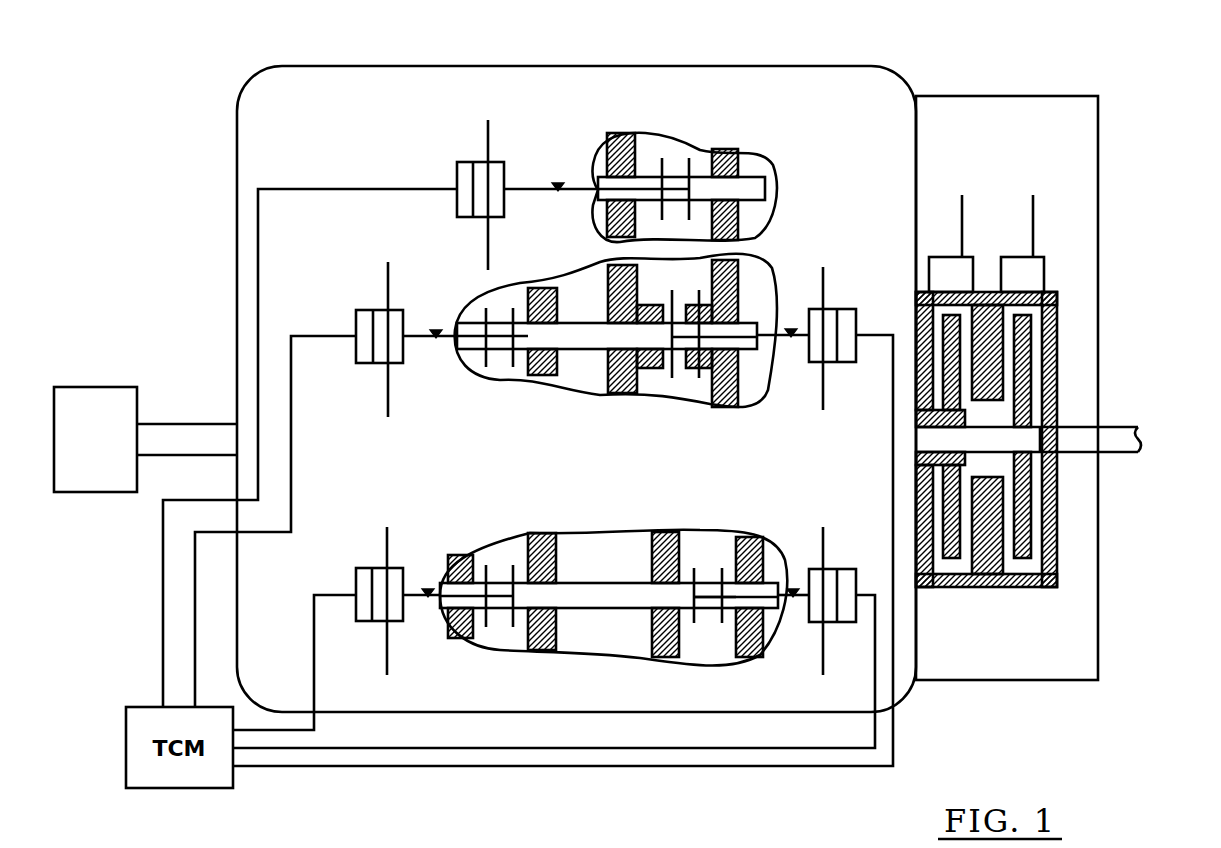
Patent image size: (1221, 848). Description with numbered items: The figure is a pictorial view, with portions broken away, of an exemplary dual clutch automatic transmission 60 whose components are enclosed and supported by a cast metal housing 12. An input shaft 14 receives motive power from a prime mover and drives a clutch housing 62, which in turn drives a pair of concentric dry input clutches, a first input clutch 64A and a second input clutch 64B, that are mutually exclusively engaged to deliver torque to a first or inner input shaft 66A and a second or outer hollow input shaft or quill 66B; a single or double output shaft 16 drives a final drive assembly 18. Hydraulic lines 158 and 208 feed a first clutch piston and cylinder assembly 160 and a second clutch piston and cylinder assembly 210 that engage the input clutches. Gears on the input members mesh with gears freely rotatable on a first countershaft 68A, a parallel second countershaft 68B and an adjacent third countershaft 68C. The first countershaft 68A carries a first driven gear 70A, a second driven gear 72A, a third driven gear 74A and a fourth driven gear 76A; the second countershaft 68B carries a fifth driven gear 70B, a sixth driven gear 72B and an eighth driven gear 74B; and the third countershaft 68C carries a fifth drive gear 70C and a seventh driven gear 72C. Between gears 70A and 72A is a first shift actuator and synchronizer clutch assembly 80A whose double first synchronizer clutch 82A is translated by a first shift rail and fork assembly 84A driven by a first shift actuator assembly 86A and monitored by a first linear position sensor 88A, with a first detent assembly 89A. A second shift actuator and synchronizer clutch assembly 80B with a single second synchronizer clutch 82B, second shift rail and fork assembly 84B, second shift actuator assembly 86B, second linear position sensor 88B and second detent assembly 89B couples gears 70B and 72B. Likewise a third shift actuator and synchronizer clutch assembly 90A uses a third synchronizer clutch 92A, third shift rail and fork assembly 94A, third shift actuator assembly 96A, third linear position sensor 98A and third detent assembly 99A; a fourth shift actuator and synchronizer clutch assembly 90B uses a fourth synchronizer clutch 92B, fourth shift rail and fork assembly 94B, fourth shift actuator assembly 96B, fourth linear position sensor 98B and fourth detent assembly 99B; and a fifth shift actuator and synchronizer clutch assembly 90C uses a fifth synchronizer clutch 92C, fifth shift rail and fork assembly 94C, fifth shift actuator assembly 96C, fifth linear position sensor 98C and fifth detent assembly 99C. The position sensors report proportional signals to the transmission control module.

The housing 12 is at (890, 65).
The input shaft 14 is at (1108, 432).
The output shaft 16 is at (160, 425).
The final drive assembly 18 is at (80, 386).
The dual clutch automatic transmission 60 is at (1129, 99).
The clutch housing 62 is at (1058, 342).
The first input clutch 64A is at (1022, 383).
The second input clutch 64B is at (960, 571).
The first input shaft 66A is at (1030, 442).
The second input shaft 66B is at (925, 470).
The first countershaft 68A is at (580, 592).
The second countershaft 68B is at (580, 340).
The third countershaft 68C is at (755, 191).
The first driven gear 70A is at (752, 646).
The fifth driven gear 70B is at (725, 403).
The fifth drive gear 70C is at (727, 156).
The second driven gear 72A is at (665, 641).
The sixth driven gear 72B is at (628, 391).
The seventh driven gear 72C is at (617, 151).
The third driven gear 74A is at (545, 641).
The eighth driven gear 74B is at (538, 370).
The fourth driven gear 76A is at (460, 636).
The first shift actuator and synchronizer clutch assembly 80A is at (764, 497).
The second shift actuator and synchronizer clutch assembly 80B is at (764, 256).
The first synchronizer clutch 82A is at (708, 601).
The second synchronizer clutch 82B is at (686, 372).
The first shift rail and fork assembly 84A is at (733, 590).
The second shift rail and fork assembly 84B is at (797, 344).
The first shift actuator assembly 86A is at (830, 580).
The second shift actuator assembly 86B is at (830, 322).
The first linear position sensor 88A is at (838, 615).
The second linear position sensor 88B is at (845, 358).
The first detent assembly 89A is at (793, 588).
The second detent assembly 89B is at (791, 330).
The third shift actuator and synchronizer clutch assembly 90A is at (409, 491).
The fourth shift actuator and synchronizer clutch assembly 90B is at (409, 235).
The fifth shift actuator and synchronizer clutch assembly 90C is at (807, 129).
The third synchronizer clutch 92A is at (497, 590).
The fourth synchronizer clutch 92B is at (498, 336).
The fifth synchronizer clutch 92C is at (671, 186).
The third shift rail and fork assembly 94A is at (408, 598).
The fourth shift rail and fork assembly 94B is at (413, 339).
The fifth shift rail and fork assembly 94C is at (524, 190).
The third shift actuator assembly 96A is at (382, 626).
The fourth shift actuator assembly 96B is at (382, 353).
The fifth shift actuator assembly 96C is at (497, 167).
The third linear position sensor 98A is at (362, 575).
The fourth linear position sensor 98B is at (363, 315).
The fifth linear position sensor 98C is at (466, 166).
The third detent assembly 99A is at (428, 588).
The fourth detent assembly 99B is at (436, 331).
The fifth detent assembly 99C is at (558, 184).
The line 158 is at (1036, 222).
The first clutch piston and cylinder assembly 160 is at (1033, 275).
The line 208 is at (963, 222).
The second clutch piston and cylinder assembly 210 is at (947, 268).